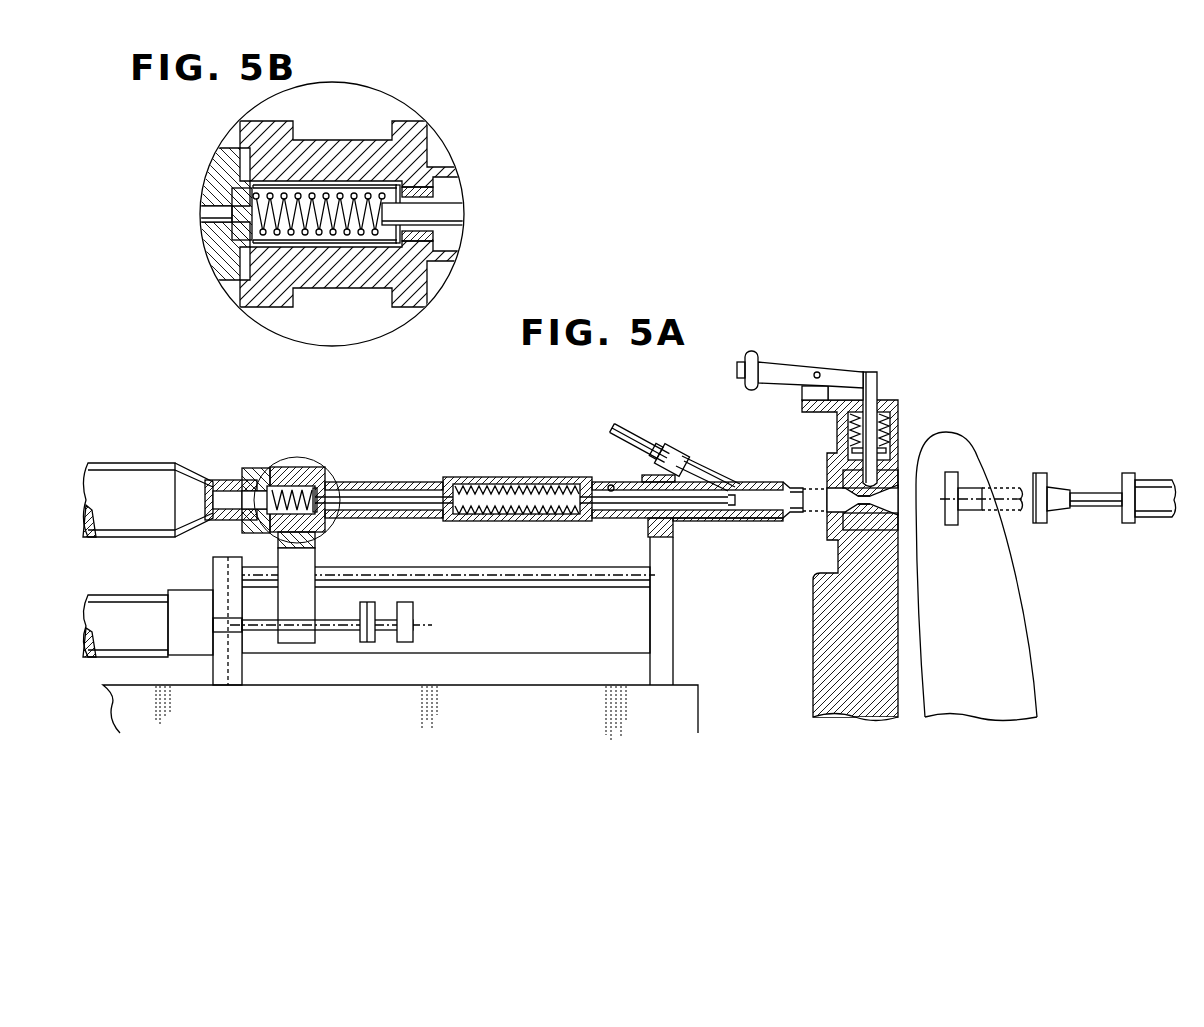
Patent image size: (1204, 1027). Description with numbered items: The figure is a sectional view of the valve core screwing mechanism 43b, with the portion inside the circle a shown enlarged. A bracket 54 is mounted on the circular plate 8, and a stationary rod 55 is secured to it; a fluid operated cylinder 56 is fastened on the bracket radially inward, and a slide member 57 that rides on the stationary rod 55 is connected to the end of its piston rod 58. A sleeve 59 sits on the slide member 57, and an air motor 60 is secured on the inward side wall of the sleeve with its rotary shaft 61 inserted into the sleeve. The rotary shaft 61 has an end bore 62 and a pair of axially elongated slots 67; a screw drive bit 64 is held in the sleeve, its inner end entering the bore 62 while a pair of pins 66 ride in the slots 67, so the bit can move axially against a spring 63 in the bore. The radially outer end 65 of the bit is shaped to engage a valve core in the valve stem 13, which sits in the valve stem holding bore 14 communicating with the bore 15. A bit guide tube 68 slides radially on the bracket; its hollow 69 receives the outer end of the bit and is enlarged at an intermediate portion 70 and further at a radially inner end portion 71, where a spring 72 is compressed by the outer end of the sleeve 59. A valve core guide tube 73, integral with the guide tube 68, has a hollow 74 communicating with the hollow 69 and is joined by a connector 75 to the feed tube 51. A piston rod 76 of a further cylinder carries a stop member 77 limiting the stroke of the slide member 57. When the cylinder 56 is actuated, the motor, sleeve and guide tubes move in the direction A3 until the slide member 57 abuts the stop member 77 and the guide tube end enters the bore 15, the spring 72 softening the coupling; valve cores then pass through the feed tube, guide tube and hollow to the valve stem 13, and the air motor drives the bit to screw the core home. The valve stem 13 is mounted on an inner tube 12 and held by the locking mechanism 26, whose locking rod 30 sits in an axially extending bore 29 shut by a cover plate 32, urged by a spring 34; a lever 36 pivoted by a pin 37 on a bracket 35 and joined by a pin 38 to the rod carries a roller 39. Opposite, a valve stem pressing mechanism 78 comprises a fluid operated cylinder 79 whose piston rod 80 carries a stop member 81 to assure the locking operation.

In FIG. 5A, the circular plate 8 is at (698, 709).
In FIG. 5A, the inner tube 12 is at (1022, 629).
In FIG. 5A, the valve stem 13 is at (863, 530).
In FIG. 5A, the valve stem holding bore 14 is at (903, 497).
In FIG. 5A, the bore 15 is at (825, 502).
In FIG. 5A, the locking mechanism 26 is at (950, 361).
In FIG. 5A, the axially extending bore 29 is at (896, 440).
In FIG. 5A, the locking rod 30 is at (890, 396).
In FIG. 5A, the cover plate 32 is at (897, 412).
In FIG. 5A, the spring 34 is at (849, 431).
In FIG. 5A, the bracket 35 is at (808, 394).
In FIG. 5A, the lever 36 is at (805, 363).
In FIG. 5A, the pin 37 is at (820, 372).
In FIG. 5A, the pin 38 is at (870, 372).
In FIG. 5A, the roller 39 is at (752, 352).
In FIG. 5A, the valve core screwing mechanism 43b is at (441, 455).
In FIG. 5A, the feed tube 51 is at (631, 430).
In FIG. 5A, the bracket 54 is at (592, 653).
In FIG. 5A, the stationary rod 55 is at (500, 590).
In FIG. 5A, the fluid operated cylinder 56 is at (150, 595).
In FIG. 5A, the slide member 57 is at (300, 645).
In FIG. 5A, the piston rod 58 is at (252, 640).
In FIG. 5A, the sleeve 59 is at (257, 468).
In FIG. 5A, the air motor 60 is at (150, 463).
In FIG. 5B, the rotary shaft 61 is at (200, 211).
In FIG. 5A, the rotary shaft 61 is at (228, 490).
In FIG. 5B, the bore 62 is at (318, 228).
In FIG. 5A, the bore 62 is at (316, 533).
In FIG. 5B, the spring 63 is at (296, 197).
In FIG. 5A, the spring 63 is at (288, 476).
In FIG. 5B, the screw drive bit 64 is at (455, 205).
In FIG. 5A, the screw drive bit 64 is at (409, 490).
In FIG. 5A, the radially outer end 65 is at (722, 519).
In FIG. 5B, the pins 66 is at (404, 184).
In FIG. 5A, the pins 66 is at (330, 487).
In FIG. 5B, the axially elongated slots 67 is at (360, 192).
In FIG. 5A, the axially elongated slots 67 is at (319, 476).
In FIG. 5A, the bit guide tube 68 is at (610, 519).
In FIG. 5A, the hollow 69 is at (770, 519).
In FIG. 5A, the intermediate portion 70 is at (609, 486).
In FIG. 5A, the radially inner end portion 71 is at (522, 519).
In FIG. 5A, the spring 72 is at (490, 480).
In FIG. 5A, the valve core guide tube 73 is at (706, 466).
In FIG. 5A, the hollow 74 is at (731, 484).
In FIG. 5A, the connector 75 is at (672, 445).
In FIG. 5A, the piston rod 76 is at (356, 620).
In FIG. 5A, the stop member 77 is at (366, 645).
In FIG. 5A, the valve stem pressing mechanism 78 is at (1112, 447).
In FIG. 5A, the fluid operated cylinder 79 is at (1152, 480).
In FIG. 5A, the piston rod 80 is at (1096, 491).
In FIG. 5A, the stop member 81 is at (1038, 473).
In FIG. 5A, the circle a is at (296, 457).
In FIG. 5A, the arrow A3 is at (370, 542).